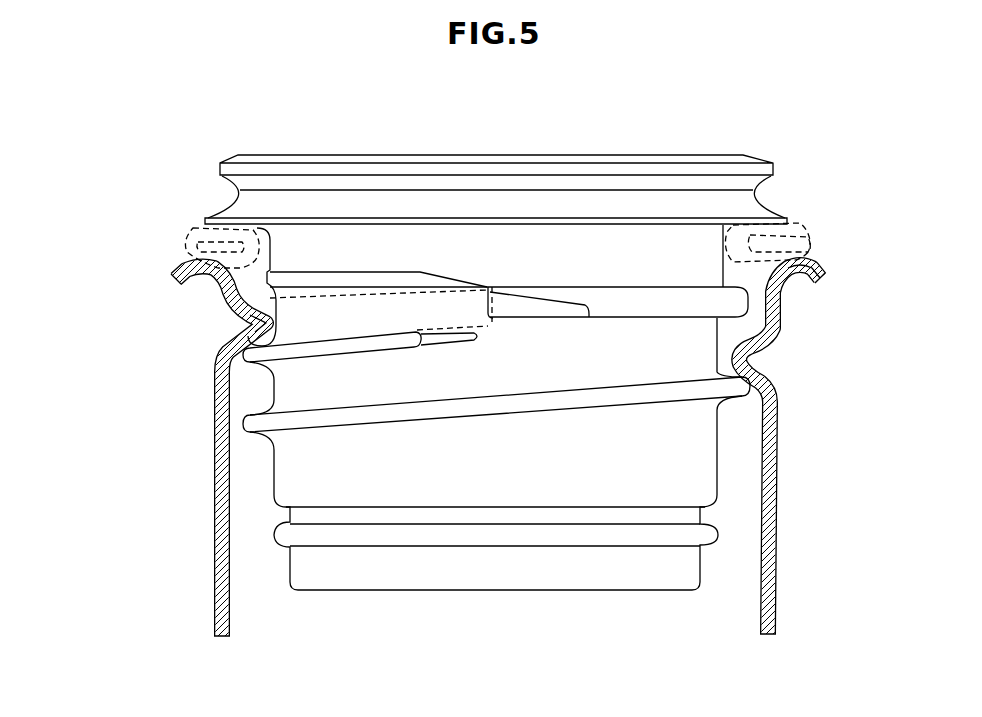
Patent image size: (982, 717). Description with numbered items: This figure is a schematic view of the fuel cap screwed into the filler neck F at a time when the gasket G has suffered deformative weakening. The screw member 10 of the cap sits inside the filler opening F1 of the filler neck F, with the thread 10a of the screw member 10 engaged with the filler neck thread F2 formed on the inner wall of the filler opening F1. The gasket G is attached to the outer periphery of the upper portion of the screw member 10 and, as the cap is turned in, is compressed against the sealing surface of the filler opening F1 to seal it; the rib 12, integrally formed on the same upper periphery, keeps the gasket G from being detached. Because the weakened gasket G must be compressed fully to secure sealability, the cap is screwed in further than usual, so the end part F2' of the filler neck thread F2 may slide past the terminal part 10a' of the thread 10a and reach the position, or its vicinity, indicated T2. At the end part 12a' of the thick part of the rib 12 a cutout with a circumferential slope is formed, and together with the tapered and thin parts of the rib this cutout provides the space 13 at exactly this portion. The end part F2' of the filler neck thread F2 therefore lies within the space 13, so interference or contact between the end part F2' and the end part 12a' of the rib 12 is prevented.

The screw member 10 is at (256, 483).
The thread 10a is at (425, 382).
The terminal part of the thread 10a' is at (423, 404).
The rib 12 is at (688, 292).
The end part of the thick part of the rib 12a' is at (611, 332).
The space 13 is at (518, 268).
The filler neck F is at (778, 428).
The filler opening F1 is at (776, 313).
The filler neck thread F2 is at (282, 196).
The end part of the filler neck thread F2' is at (384, 197).
The gasket G is at (190, 233).
The position reached by the filler neck thread end part T2 is at (492, 322).